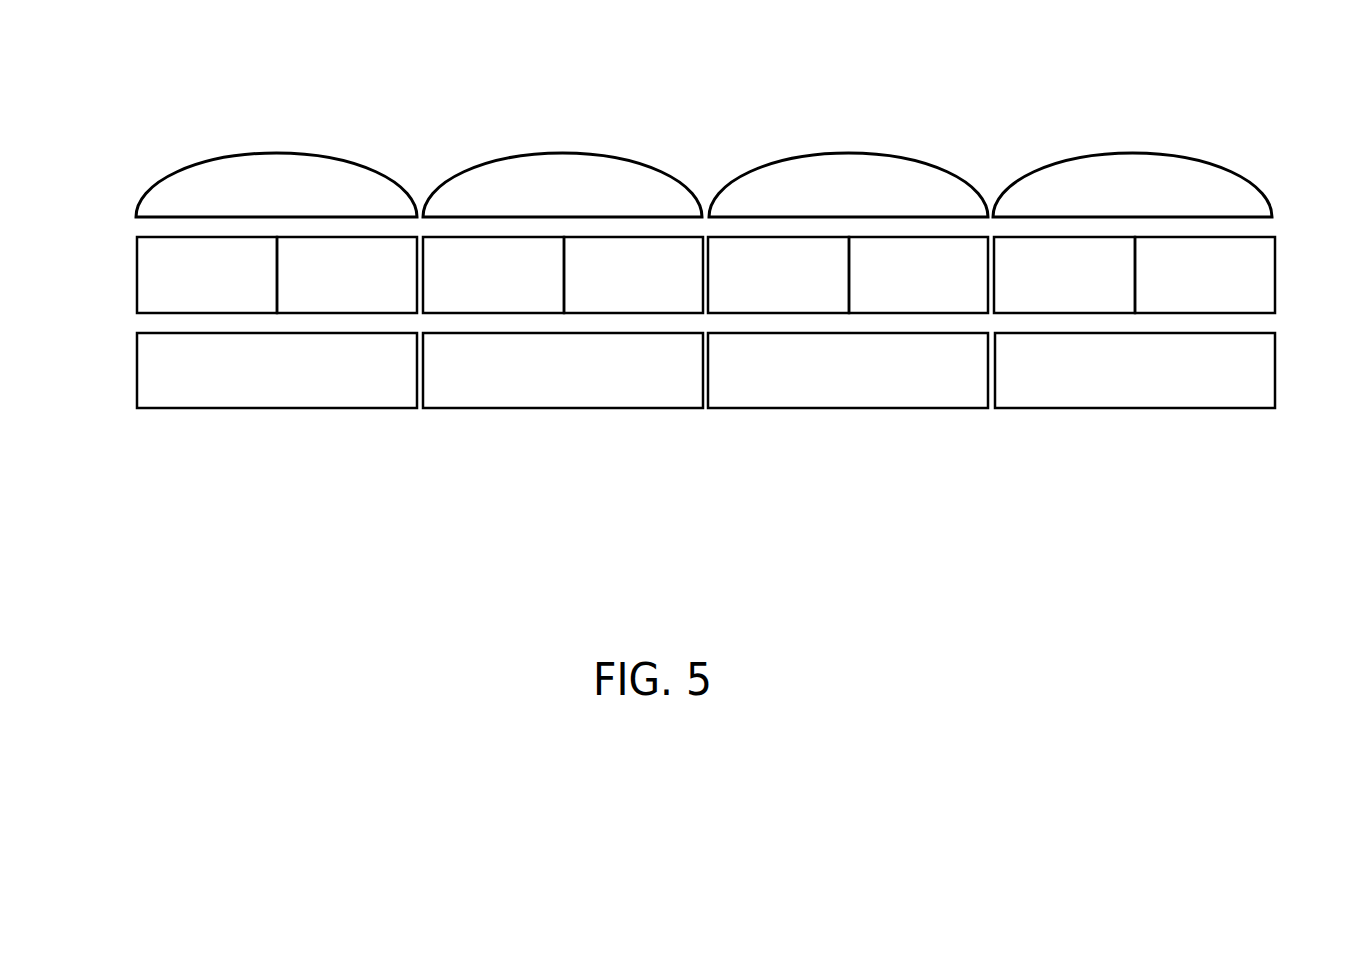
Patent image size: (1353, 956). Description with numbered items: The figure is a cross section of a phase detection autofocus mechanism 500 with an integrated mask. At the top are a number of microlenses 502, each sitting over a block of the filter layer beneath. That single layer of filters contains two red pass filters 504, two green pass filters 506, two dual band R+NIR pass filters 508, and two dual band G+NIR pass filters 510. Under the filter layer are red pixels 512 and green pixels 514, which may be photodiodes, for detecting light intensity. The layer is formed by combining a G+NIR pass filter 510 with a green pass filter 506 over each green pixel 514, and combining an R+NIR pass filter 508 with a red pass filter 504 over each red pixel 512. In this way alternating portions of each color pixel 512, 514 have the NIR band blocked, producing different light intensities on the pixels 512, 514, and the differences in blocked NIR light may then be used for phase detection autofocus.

The phase detection autofocus mechanism 500 is at (672, 641).
The microlenses 502 is at (1050, 163).
The red pass filters 504 is at (652, 313).
The green pass filters 506 is at (379, 313).
The dual band R+NIR pass filters 508 is at (479, 313).
The dual band G+NIR pass filters 510 is at (137, 276).
The red pixels 512 is at (572, 409).
The green pixels 514 is at (223, 410).